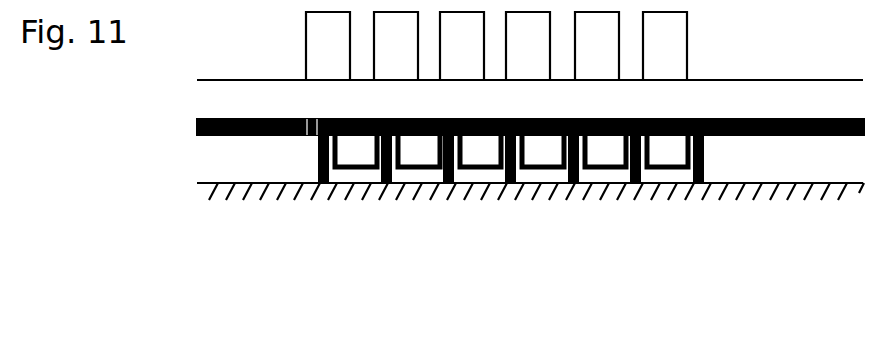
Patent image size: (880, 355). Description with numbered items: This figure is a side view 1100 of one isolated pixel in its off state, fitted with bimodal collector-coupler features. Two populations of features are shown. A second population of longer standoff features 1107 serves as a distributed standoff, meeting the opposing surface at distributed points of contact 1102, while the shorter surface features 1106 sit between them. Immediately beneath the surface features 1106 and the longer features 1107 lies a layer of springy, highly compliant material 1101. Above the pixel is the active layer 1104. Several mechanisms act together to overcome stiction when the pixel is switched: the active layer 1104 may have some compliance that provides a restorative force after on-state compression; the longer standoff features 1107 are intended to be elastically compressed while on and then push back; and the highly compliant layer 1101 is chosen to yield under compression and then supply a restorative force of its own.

The side view 1100 is at (473, 135).
The highly compliant material layer 1101 is at (802, 137).
The distributed points of contact 1102 is at (329, 183).
The active layer 1104 is at (530, 63).
The surface features 1106 is at (475, 170).
The longer standoff features 1107 is at (705, 160).